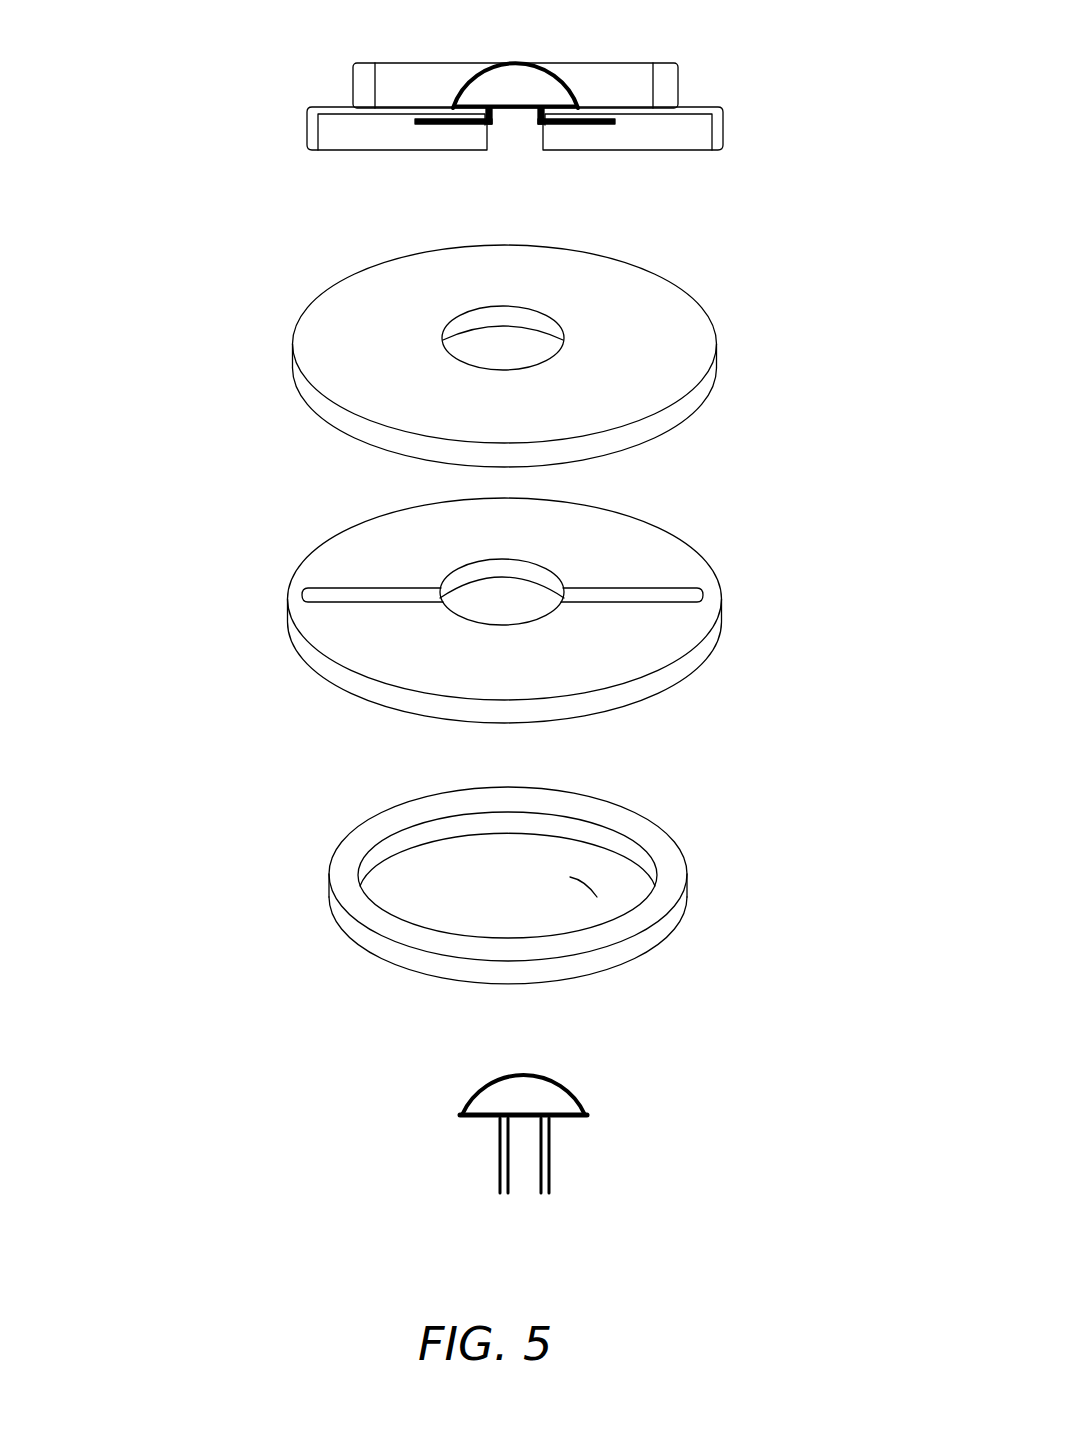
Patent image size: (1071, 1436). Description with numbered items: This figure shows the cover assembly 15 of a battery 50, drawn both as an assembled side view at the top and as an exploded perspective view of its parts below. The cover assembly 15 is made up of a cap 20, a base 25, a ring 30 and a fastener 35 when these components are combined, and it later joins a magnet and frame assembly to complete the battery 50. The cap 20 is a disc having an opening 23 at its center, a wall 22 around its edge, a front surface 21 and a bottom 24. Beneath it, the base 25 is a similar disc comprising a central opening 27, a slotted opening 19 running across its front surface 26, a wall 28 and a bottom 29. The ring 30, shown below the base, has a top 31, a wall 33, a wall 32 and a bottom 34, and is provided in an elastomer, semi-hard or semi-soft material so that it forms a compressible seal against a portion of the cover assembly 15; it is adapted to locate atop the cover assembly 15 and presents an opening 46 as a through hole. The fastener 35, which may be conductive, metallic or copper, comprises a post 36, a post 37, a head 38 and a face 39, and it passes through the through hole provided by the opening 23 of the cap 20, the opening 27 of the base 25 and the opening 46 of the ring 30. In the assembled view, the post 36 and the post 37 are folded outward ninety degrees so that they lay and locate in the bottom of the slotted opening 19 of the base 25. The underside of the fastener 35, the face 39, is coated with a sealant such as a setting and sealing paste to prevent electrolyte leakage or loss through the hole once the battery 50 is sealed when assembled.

The cover assembly 15 is at (802, 45).
The opening 19 is at (332, 597).
The cap 20 is at (785, 282).
The front surface 21 is at (673, 327).
The wall 22 is at (293, 348).
The opening 23 is at (485, 338).
The bottom 24 is at (618, 450).
The base 25 is at (800, 538).
The front surface 26 is at (683, 565).
The opening 27 is at (488, 598).
The wall 28 is at (637, 942).
The bottom 29 is at (310, 670).
The ring 30 is at (218, 828).
The top 31 is at (348, 850).
The wall 32 is at (687, 875).
The wall 33 is at (532, 822).
The bottom 34 is at (392, 965).
The fastener 35 is at (327, 1088).
The post 36 is at (498, 1145).
The post 37 is at (545, 1147).
The head 38 is at (558, 1085).
The face 39 is at (482, 1118).
The opening 46 is at (588, 880).
The battery 50 is at (112, 252).